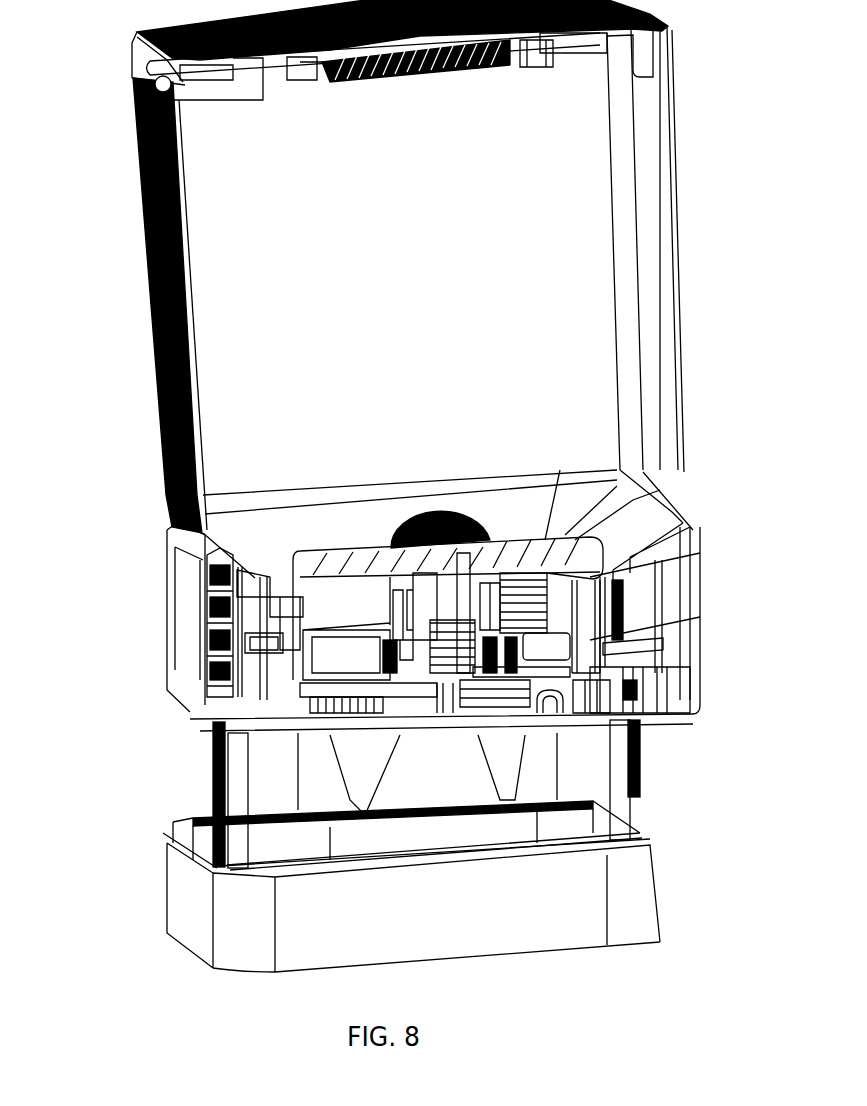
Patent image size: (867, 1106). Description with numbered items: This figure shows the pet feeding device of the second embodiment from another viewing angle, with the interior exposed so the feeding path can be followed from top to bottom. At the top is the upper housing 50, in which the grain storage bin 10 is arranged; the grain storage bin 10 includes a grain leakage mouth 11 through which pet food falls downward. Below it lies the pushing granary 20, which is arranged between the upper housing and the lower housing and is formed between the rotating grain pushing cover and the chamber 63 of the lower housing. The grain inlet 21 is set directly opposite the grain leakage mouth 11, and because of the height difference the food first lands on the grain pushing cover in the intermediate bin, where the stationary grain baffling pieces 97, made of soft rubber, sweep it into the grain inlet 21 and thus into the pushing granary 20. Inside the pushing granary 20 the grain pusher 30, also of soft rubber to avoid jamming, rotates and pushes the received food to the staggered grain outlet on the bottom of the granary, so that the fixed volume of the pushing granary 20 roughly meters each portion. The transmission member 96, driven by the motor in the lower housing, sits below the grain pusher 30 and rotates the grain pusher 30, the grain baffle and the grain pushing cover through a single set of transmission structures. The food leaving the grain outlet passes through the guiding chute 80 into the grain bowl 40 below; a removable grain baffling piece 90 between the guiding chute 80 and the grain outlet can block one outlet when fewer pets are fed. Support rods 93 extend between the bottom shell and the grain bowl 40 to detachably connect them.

The grain storage bin 10 is at (515, 310).
The upper housing 50 is at (649, 380).
The grain leakage mouth 11 is at (340, 613).
The chamber 63 is at (178, 515).
The grain inlet 21 is at (228, 580).
The grain pusher 30 is at (342, 662).
The guiding chute 80 is at (350, 748).
The grain bowl 40 is at (200, 833).
The grain baffling piece 90 is at (565, 553).
The grain baffling piece 97 is at (560, 588).
The pushing granary 20 is at (560, 645).
The transmission member 96 is at (540, 722).
The support rod 93 is at (623, 807).